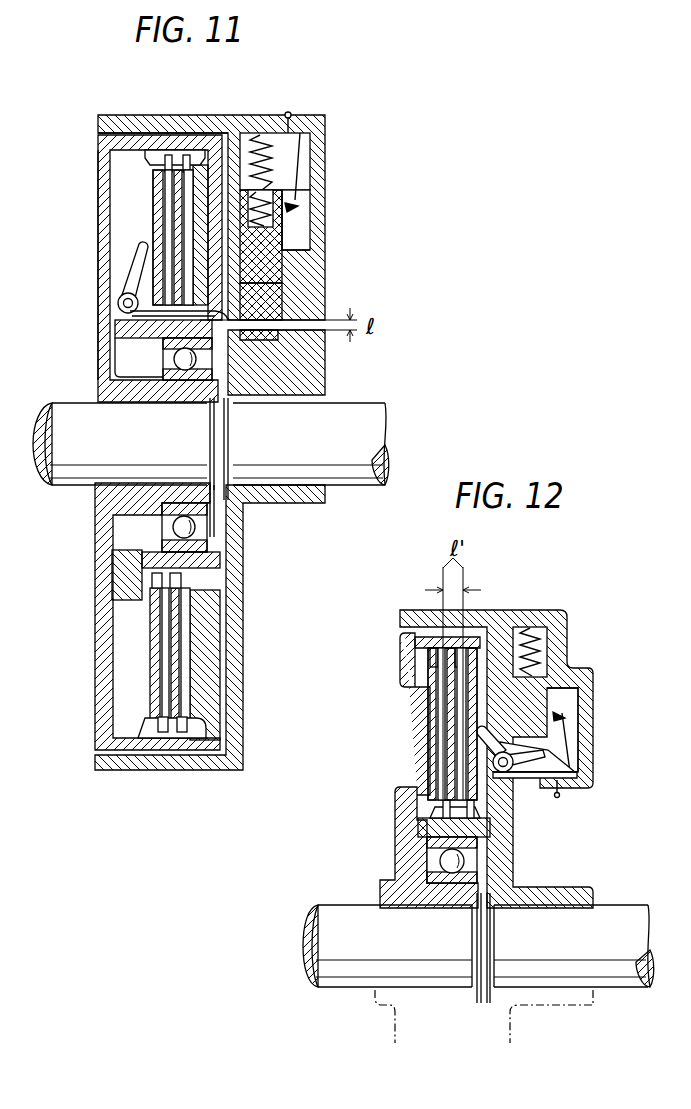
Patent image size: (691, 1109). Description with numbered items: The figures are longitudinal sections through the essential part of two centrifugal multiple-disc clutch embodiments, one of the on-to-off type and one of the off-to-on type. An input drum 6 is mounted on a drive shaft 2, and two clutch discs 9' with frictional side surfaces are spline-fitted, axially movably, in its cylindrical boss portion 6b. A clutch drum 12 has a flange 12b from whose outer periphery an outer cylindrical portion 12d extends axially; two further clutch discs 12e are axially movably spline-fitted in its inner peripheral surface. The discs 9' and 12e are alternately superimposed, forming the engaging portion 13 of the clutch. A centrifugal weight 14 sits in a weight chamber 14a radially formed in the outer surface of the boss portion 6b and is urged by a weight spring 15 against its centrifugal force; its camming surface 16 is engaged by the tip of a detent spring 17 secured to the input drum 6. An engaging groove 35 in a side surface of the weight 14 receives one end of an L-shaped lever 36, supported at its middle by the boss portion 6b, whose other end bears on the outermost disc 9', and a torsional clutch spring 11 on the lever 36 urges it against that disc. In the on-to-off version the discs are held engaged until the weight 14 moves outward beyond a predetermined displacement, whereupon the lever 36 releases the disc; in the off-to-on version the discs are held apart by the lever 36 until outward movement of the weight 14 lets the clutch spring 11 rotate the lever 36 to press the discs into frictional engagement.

In FIG. 11, the drive shaft 2 is at (378, 432).
In FIG. 12, the drive shaft 2 is at (623, 930).
In FIG. 11, the input drum 6 is at (222, 126).
In FIG. 12, the input drum 6 is at (517, 610).
In FIG. 11, the cylindrical boss portion 6b is at (137, 333).
In FIG. 11, the clutch discs 9' is at (130, 231).
In FIG. 12, the clutch discs 9' is at (419, 724).
In FIG. 11, the clutch spring 11 is at (122, 297).
In FIG. 12, the clutch spring 11 is at (507, 778).
In FIG. 11, the clutch drum 12 is at (100, 252).
In FIG. 11, the flange 12b is at (97, 270).
In FIG. 11, the outer cylindrical portion 12d is at (122, 145).
In FIG. 11, the clutch discs 12e is at (185, 225).
In FIG. 12, the clutch discs 12e is at (465, 722).
In FIG. 11, the disc stack 13 is at (50, 160).
In FIG. 12, the disc stack 13 is at (352, 702).
In FIG. 11, the centrifugal weight 14 is at (272, 283).
In FIG. 12, the centrifugal weight 14 is at (553, 690).
In FIG. 11, the weight chamber 14a is at (292, 238).
In FIG. 11, the weight spring 15 is at (268, 152).
In FIG. 12, the weight spring 15 is at (540, 648).
In FIG. 11, the camming surface 16 is at (288, 217).
In FIG. 12, the camming surface 16 is at (520, 745).
In FIG. 11, the detent spring 17 is at (300, 177).
In FIG. 12, the detent spring 17 is at (572, 772).
In FIG. 11, the engaging groove 35 is at (280, 287).
In FIG. 11, the lever 36 is at (267, 368).
In FIG. 12, the lever 36 is at (548, 762).